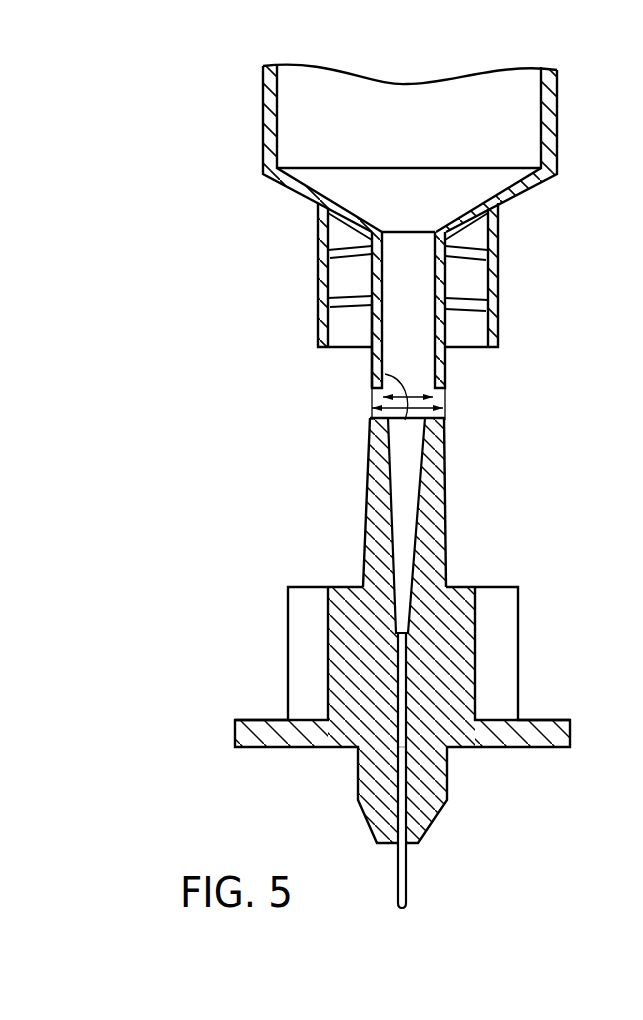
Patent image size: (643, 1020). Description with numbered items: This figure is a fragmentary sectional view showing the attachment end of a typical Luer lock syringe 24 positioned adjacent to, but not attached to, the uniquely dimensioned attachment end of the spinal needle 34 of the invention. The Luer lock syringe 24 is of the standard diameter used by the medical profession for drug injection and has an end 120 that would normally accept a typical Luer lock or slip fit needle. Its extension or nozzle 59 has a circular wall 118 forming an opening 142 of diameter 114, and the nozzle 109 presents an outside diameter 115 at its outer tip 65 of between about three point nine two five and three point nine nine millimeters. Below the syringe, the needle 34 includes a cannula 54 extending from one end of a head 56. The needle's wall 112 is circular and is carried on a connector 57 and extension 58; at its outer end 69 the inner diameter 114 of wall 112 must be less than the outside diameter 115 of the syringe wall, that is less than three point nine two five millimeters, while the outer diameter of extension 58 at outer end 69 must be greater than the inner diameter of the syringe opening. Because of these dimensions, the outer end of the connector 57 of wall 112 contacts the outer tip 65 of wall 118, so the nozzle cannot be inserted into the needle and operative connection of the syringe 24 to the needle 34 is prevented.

The Luer lock syringe 24 is at (520, 245).
The end 120 is at (294, 282).
The opening 142 is at (400, 318).
The nozzle 109 is at (372, 356).
The circular wall 118 is at (372, 367).
The diameter 114 is at (378, 372).
The outer tip 65 is at (447, 395).
The extension or nozzle 59 is at (446, 360).
The outer end 69 is at (372, 413).
The outside diameter 115 is at (374, 437).
The wall 112 is at (446, 462).
The connector 57 is at (368, 474).
The extension 58 is at (378, 508).
The spinal needle 34 is at (515, 538).
The head 56 is at (519, 655).
The cannula 54 is at (407, 880).